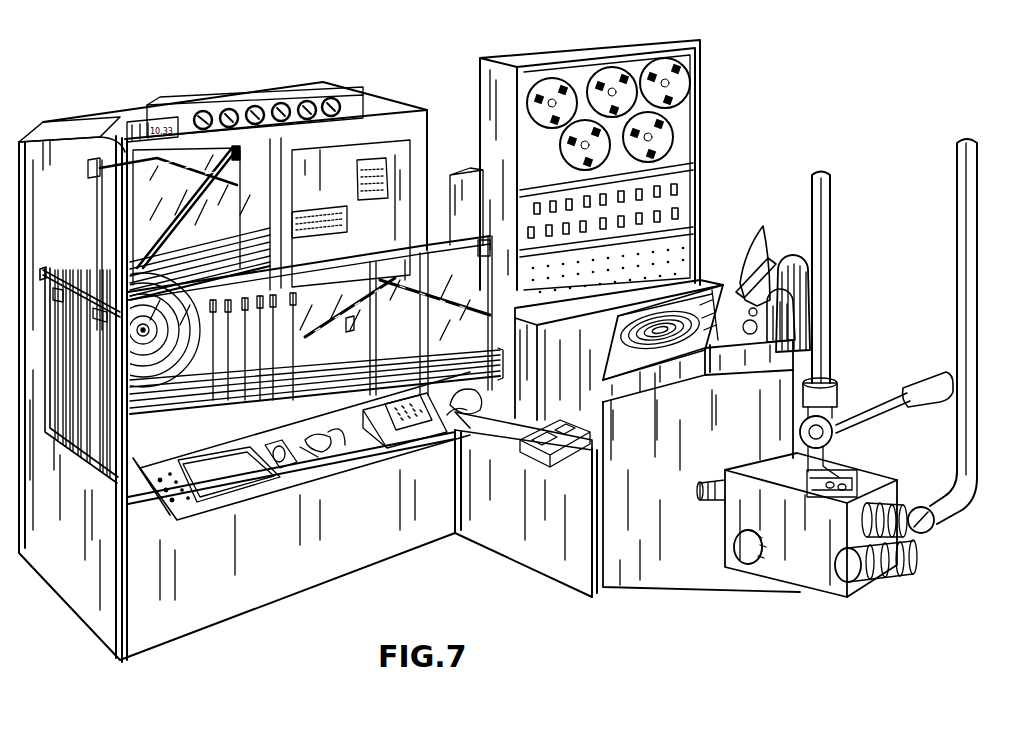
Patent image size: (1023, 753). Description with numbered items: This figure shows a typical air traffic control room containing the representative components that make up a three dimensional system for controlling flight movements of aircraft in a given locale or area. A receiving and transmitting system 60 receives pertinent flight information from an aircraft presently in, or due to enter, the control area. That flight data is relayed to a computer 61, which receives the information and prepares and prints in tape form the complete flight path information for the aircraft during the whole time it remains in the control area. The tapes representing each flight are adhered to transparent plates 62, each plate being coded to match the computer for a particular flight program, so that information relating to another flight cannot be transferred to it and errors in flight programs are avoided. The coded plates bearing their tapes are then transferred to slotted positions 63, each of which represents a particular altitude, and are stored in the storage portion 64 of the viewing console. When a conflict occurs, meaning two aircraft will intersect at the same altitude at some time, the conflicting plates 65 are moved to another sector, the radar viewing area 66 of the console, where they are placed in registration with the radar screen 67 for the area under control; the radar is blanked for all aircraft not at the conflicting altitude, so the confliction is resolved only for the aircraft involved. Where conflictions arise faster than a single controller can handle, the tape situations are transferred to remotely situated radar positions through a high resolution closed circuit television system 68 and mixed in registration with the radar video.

The receiving and transmitting system 60 is at (714, 273).
The computer 61 is at (687, 448).
The transparent plates 62 is at (463, 252).
The slotted positions 63 is at (493, 352).
The storage portion 64 is at (352, 280).
The conflicting plates 65 is at (105, 207).
The radar viewing area 66 is at (265, 187).
The radar screen 67 is at (173, 352).
The high resolution closed circuit television system 68 is at (798, 568).